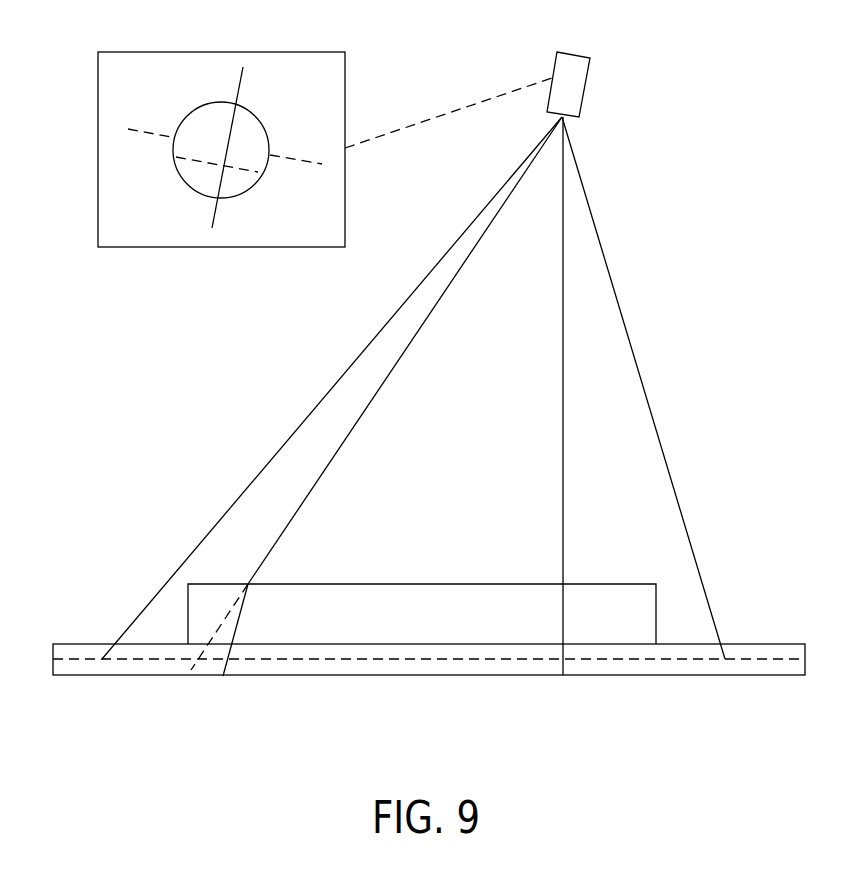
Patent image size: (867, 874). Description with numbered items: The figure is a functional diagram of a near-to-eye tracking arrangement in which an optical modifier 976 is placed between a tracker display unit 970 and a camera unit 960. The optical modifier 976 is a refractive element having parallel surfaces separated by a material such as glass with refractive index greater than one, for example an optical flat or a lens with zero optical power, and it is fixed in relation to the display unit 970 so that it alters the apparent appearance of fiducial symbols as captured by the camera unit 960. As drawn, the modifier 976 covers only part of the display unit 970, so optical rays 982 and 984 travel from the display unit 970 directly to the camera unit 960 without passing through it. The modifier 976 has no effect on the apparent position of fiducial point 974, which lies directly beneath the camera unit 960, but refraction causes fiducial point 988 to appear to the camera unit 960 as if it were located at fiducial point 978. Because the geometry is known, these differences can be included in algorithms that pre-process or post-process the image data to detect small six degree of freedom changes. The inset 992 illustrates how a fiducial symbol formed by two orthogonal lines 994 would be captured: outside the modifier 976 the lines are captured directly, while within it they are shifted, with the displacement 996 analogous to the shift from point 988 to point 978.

The camera unit 960 is at (555, 68).
The tracker display unit 970 is at (68, 675).
The fiducial point 974 is at (563, 675).
The optical modifier 976 is at (603, 603).
The fiducial point 978 is at (198, 662).
The optical ray 982 is at (633, 350).
The optical ray 984 is at (282, 447).
The fiducial point 988 is at (223, 676).
The inset 992 is at (98, 97).
The orthogonal lines 994 is at (283, 157).
The ray displacement 996 is at (202, 183).